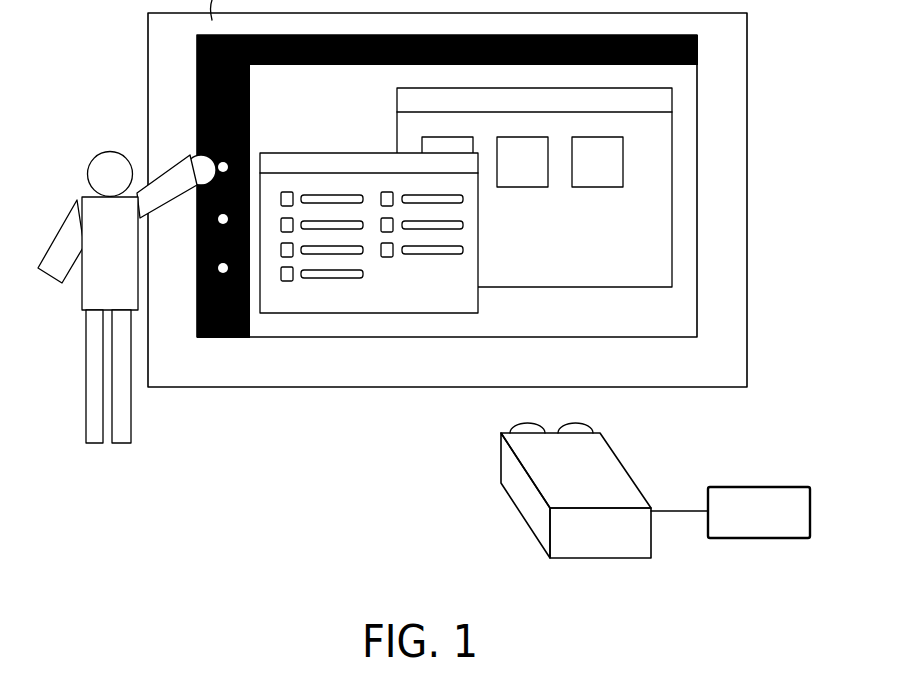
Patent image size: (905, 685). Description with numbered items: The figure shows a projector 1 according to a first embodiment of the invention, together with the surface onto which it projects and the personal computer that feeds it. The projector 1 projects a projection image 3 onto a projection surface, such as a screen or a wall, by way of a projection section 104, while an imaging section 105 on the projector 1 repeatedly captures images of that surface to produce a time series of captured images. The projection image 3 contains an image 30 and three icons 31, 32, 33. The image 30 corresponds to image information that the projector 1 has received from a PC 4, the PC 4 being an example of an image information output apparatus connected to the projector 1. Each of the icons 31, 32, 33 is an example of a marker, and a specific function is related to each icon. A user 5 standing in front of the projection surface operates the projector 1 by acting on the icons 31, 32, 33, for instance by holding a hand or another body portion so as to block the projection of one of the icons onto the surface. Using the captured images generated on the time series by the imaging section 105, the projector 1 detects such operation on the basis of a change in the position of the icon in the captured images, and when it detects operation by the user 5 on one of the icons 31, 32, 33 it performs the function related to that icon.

The projector 1 is at (615, 478).
The projection image 3 is at (698, 107).
The image 30 is at (687, 248).
The icon 31 is at (198, 130).
The icon 32 is at (197, 225).
The icon 33 is at (197, 275).
The PC 4 is at (788, 487).
The user 5 is at (85, 132).
The projection section 104 is at (580, 427).
The imaging section 105 is at (520, 427).